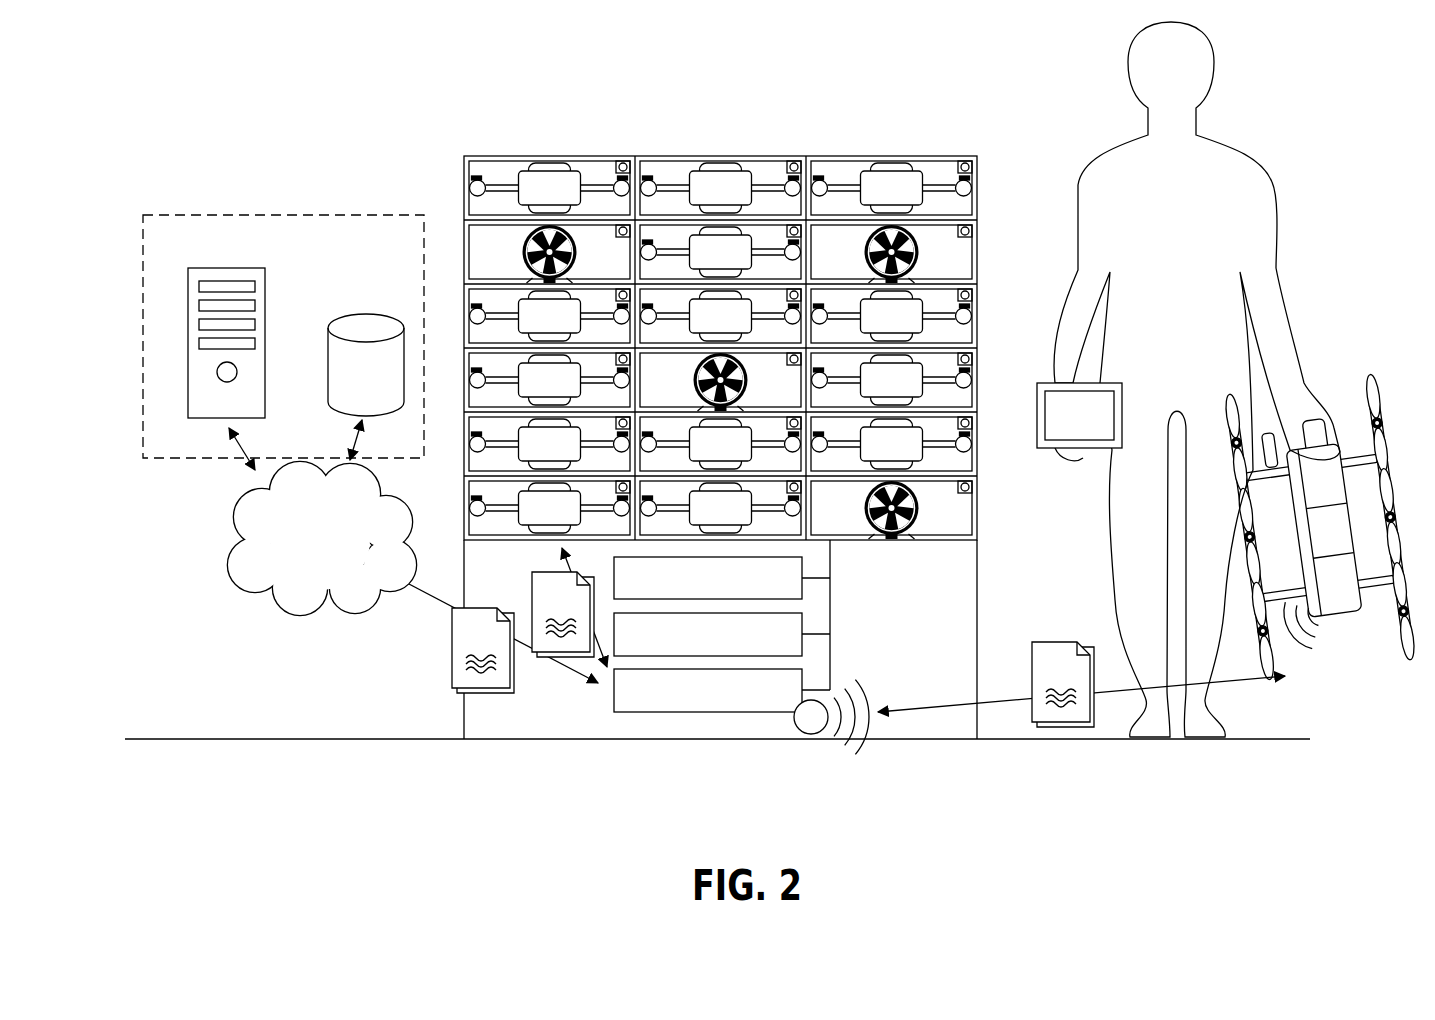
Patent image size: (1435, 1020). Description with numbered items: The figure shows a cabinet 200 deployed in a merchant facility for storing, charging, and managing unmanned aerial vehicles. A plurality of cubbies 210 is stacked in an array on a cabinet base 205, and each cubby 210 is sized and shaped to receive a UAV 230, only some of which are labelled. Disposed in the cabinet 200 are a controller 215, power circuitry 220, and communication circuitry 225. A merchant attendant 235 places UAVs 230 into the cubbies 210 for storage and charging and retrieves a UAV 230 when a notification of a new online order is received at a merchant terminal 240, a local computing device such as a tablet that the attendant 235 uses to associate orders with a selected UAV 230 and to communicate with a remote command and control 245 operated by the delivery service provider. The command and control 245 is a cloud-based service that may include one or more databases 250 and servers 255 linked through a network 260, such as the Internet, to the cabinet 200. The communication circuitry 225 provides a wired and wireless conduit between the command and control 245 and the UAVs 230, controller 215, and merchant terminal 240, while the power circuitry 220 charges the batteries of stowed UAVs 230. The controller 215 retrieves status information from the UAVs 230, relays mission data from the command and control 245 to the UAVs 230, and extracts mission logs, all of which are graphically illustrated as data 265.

The cabinet 200 is at (406, 112).
The cabinet base 205 is at (720, 639).
The cubby 210 is at (602, 156).
The controller 215 is at (708, 578).
The power circuitry 220 is at (708, 634).
The communication circuitry 225 is at (708, 690).
The UAV 230 is at (1386, 703).
The merchant attendant 235 is at (1197, 379).
The merchant terminal 240 is at (1079, 415).
The command and control 245 is at (283, 336).
The database 250 is at (366, 365).
The server 255 is at (226, 343).
The network 260 is at (322, 538).
The data 265 is at (773, 649).